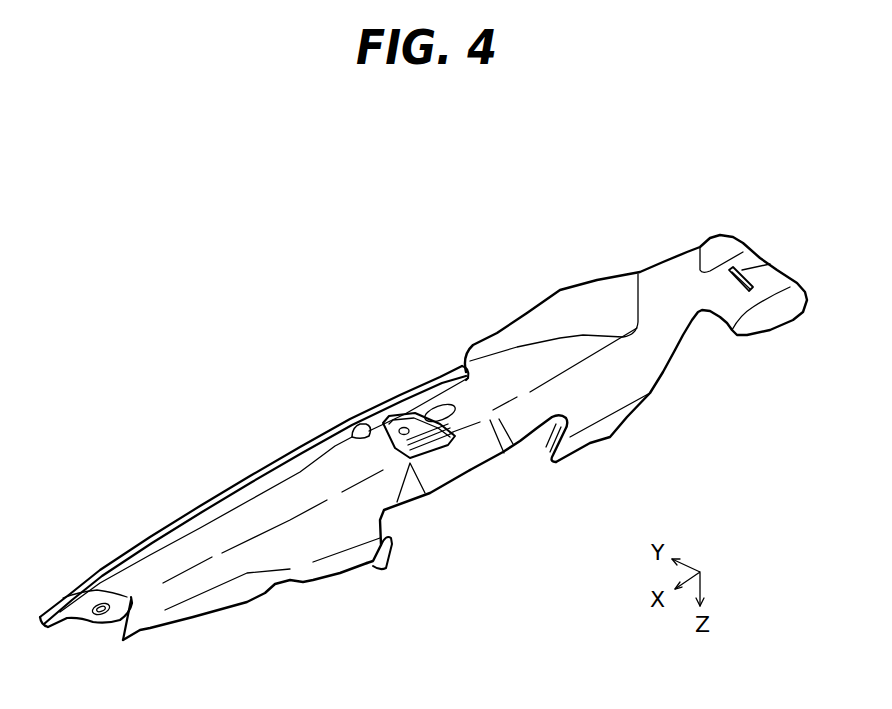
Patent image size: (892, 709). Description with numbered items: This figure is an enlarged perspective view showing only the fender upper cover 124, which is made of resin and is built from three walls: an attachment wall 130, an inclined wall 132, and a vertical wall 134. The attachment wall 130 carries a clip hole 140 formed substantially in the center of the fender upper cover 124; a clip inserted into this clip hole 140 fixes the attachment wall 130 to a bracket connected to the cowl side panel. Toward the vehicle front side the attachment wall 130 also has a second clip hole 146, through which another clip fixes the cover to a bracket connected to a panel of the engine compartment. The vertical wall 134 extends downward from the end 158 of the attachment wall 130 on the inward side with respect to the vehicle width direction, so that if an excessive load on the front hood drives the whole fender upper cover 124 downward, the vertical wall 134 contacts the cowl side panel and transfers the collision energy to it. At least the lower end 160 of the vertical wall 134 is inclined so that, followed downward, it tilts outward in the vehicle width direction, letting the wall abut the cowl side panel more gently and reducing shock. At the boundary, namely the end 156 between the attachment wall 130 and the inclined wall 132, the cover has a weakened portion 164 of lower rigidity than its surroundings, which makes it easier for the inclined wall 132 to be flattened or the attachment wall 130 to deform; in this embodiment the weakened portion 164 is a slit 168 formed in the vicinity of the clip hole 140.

The fender upper cover 124 is at (625, 224).
The attachment wall 130 is at (184, 562).
The inclined wall 132 is at (193, 513).
The vertical wall 134 is at (323, 542).
The clip hole 140 is at (404, 428).
The clip hole 146 is at (95, 614).
The end 156 is at (276, 480).
The end 158 is at (260, 535).
The lower end 160 is at (390, 540).
The weakened portion 164 is at (362, 424).
The slit 168 is at (440, 387).